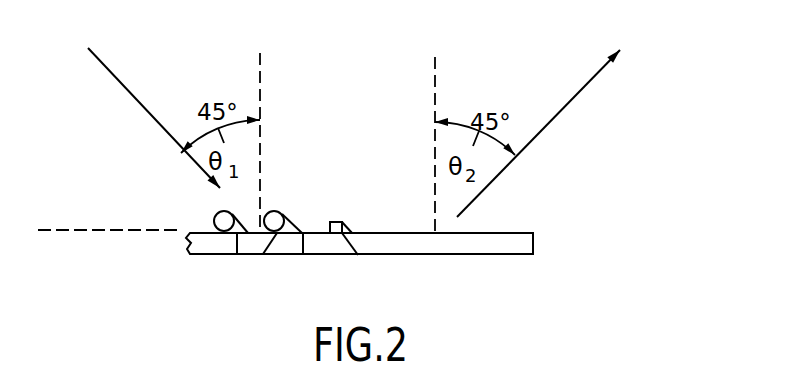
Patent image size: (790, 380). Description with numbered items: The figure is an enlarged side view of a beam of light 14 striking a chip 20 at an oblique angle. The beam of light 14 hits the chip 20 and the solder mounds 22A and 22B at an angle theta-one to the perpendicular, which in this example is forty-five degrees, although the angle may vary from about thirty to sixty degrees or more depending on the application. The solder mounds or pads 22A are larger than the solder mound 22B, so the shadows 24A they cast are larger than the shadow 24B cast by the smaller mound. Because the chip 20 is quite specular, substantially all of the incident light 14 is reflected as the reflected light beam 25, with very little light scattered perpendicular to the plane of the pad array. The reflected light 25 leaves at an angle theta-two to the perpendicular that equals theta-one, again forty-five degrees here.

The beam of light 14 is at (103, 63).
The reflected light beam 25 is at (583, 88).
The chip 20 is at (510, 255).
The solder mounds 22A is at (216, 214).
The solder mound 22B is at (336, 222).
The shadows 24A is at (263, 254).
The shadow 24B is at (358, 255).